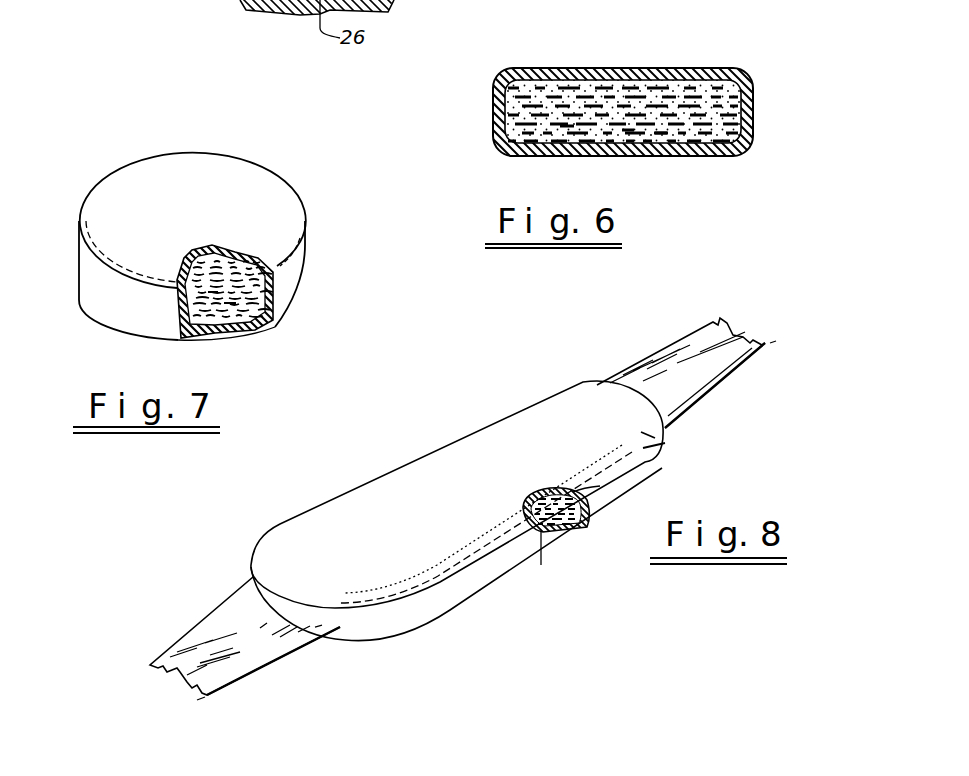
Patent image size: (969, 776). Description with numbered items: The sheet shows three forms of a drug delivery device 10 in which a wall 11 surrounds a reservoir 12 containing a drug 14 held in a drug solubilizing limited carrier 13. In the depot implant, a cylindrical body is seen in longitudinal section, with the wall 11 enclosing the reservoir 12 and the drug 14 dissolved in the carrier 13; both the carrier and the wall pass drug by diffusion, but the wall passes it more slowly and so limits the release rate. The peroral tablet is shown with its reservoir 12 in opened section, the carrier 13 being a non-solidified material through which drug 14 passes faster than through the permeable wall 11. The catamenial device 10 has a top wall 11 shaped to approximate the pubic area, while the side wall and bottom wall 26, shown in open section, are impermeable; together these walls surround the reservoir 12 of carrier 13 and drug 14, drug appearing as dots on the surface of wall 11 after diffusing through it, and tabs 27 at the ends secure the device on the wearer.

In FIG. 6, the drug delivery device 10 is at (651, 60).
In FIG. 7, the drug delivery device 10 is at (277, 168).
In FIG. 8, the drug delivery device 10 is at (443, 448).
In FIG. 6, the wall 11 is at (751, 96).
In FIG. 7, the wall 11 is at (279, 240).
In FIG. 8, the wall 11 is at (520, 447).
In FIG. 6, the reservoir 12 is at (703, 123).
In FIG. 7, the reservoir 12 is at (231, 268).
In FIG. 6, the drug solubilizing limited carrier 13 is at (567, 127).
In FIG. 7, the drug solubilizing limited carrier 13 is at (230, 305).
In FIG. 8, the drug solubilizing limited carrier 13 is at (573, 492).
In FIG. 6, the drug 14 is at (660, 135).
In FIG. 7, the drug 14 is at (222, 300).
In FIG. 8, the drug 14 is at (642, 433).
In FIG. 8, the side wall and bottom wall 26 is at (517, 563).
In FIG. 8, the tabs 27 is at (717, 372).